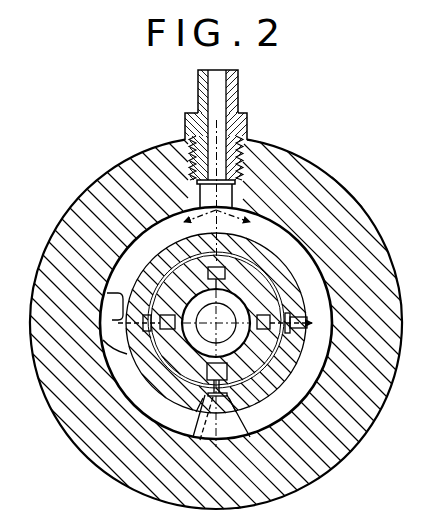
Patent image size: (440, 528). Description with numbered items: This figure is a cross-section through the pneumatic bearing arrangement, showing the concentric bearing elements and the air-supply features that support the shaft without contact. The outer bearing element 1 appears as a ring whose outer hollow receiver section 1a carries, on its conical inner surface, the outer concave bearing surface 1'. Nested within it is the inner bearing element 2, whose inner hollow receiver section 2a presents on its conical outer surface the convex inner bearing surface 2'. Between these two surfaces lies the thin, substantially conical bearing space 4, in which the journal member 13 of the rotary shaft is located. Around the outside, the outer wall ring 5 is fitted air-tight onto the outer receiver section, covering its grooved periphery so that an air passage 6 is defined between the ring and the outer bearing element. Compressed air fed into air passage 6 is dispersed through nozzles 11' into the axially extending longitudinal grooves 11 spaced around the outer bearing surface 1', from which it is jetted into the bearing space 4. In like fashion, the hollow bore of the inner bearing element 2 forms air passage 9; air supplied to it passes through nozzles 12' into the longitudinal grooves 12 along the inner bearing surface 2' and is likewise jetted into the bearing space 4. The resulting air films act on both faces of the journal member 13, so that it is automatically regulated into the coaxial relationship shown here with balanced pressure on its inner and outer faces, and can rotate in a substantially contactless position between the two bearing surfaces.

The outer bearing element 1 is at (225, 322).
The outer hollow receiver section 1a is at (263, 250).
The outer concave bearing surface 1' is at (216, 318).
The inner bearing element 2 is at (198, 339).
The inner hollow receiver section 2a is at (196, 412).
The inner bearing surface 2' is at (235, 392).
The bearing space 4 is at (254, 246).
The outer wall ring 5 is at (68, 213).
The air passage 6 is at (116, 380).
The air passage 9 is at (233, 343).
The longitudinal grooves 11 is at (256, 332).
The nozzles 11' is at (240, 254).
The longitudinal grooves 12 is at (210, 354).
The nozzles 12' is at (227, 306).
The journal member 13 is at (117, 296).